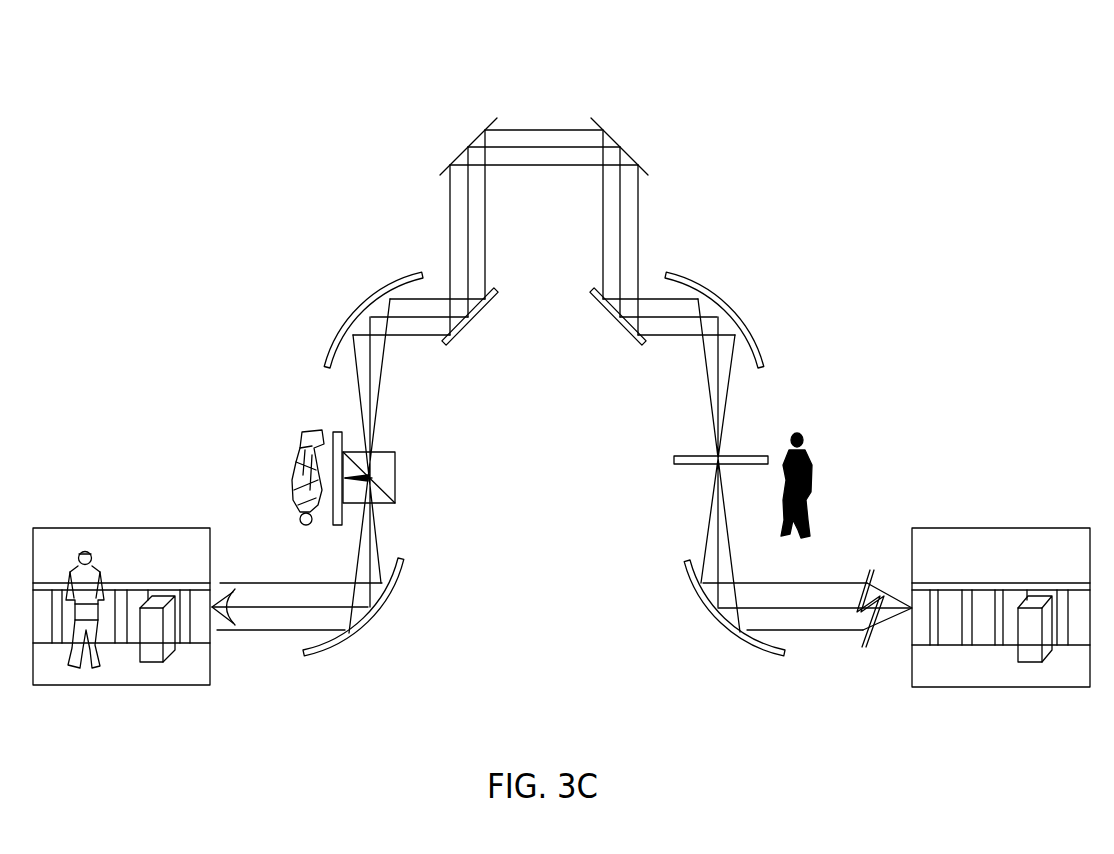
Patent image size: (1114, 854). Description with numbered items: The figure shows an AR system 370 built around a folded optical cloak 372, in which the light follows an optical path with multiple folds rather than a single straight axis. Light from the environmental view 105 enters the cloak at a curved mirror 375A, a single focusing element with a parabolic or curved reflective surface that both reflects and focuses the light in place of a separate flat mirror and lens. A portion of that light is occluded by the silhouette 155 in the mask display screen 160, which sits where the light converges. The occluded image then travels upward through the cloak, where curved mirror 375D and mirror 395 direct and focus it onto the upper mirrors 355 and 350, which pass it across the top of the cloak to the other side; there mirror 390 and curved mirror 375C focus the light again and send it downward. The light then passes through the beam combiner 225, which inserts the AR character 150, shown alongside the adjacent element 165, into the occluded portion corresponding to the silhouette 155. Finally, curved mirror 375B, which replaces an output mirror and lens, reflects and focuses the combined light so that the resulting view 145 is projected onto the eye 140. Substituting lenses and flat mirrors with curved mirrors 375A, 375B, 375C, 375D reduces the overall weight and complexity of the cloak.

The AR system 370 is at (913, 76).
The folded optical cloak 372 is at (760, 102).
The mirror 350 is at (478, 127).
The mirror 355 is at (611, 128).
The curved mirror 375C is at (372, 300).
The curved mirror 375D is at (717, 300).
The mirror 390 is at (464, 329).
The mirror 395 is at (624, 329).
The display / transparent panel 165 is at (338, 431).
The AR character 150 is at (298, 449).
The beam combiner 225 is at (397, 460).
The eye 140 is at (216, 585).
The view 145 is at (73, 686).
The curved mirror 375B is at (352, 635).
The curved mirror 375A is at (736, 635).
The mask display screen 160 is at (750, 456).
The silhouette 155 is at (813, 447).
The environmental view 105 is at (963, 688).